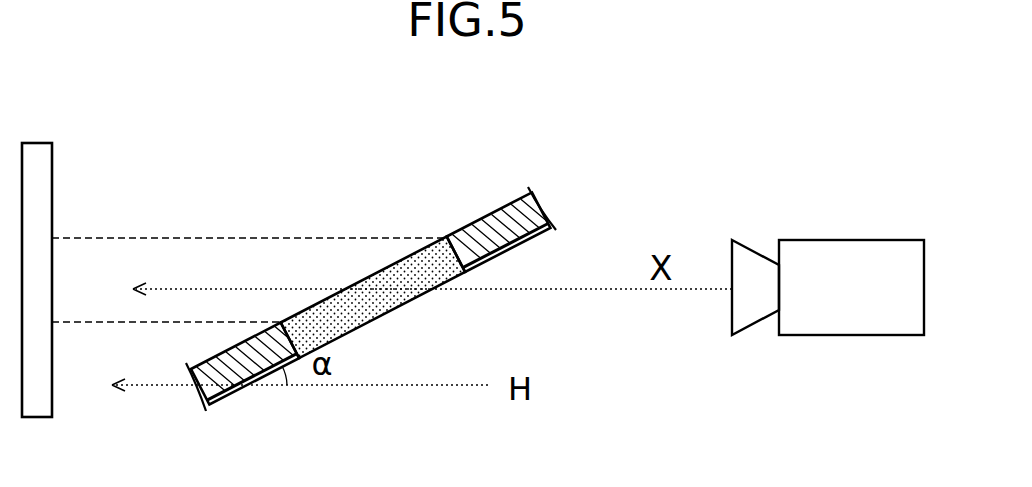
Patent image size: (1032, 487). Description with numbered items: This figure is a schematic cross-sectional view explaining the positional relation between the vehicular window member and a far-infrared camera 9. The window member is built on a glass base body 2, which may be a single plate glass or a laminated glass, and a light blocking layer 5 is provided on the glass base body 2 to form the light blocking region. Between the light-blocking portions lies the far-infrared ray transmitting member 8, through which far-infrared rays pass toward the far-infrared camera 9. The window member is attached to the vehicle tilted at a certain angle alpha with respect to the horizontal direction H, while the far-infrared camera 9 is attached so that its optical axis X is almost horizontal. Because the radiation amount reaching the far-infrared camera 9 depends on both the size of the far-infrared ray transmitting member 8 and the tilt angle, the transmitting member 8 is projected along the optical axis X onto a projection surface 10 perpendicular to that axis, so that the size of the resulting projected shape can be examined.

The projection surface 10 is at (53, 155).
The glass base body 2 is at (196, 367).
The light blocking layer 5 is at (533, 233).
The far-infrared ray transmitting member 8 is at (348, 323).
The far-infrared camera 9 is at (838, 262).